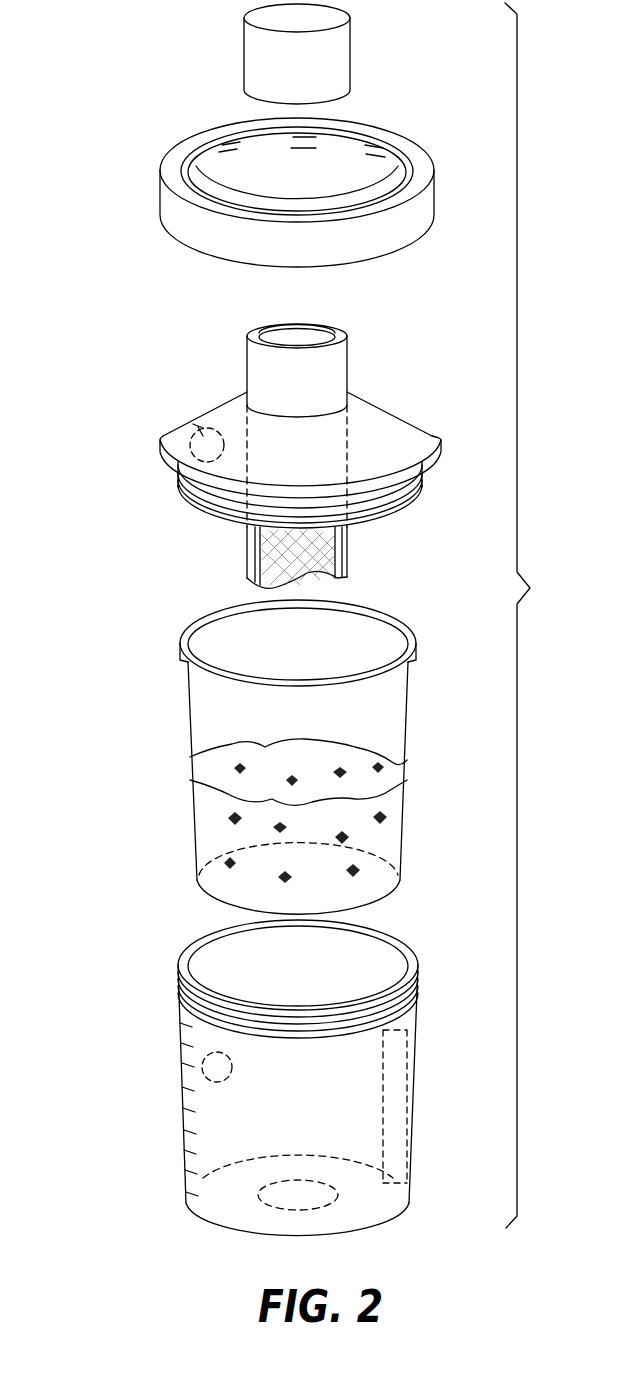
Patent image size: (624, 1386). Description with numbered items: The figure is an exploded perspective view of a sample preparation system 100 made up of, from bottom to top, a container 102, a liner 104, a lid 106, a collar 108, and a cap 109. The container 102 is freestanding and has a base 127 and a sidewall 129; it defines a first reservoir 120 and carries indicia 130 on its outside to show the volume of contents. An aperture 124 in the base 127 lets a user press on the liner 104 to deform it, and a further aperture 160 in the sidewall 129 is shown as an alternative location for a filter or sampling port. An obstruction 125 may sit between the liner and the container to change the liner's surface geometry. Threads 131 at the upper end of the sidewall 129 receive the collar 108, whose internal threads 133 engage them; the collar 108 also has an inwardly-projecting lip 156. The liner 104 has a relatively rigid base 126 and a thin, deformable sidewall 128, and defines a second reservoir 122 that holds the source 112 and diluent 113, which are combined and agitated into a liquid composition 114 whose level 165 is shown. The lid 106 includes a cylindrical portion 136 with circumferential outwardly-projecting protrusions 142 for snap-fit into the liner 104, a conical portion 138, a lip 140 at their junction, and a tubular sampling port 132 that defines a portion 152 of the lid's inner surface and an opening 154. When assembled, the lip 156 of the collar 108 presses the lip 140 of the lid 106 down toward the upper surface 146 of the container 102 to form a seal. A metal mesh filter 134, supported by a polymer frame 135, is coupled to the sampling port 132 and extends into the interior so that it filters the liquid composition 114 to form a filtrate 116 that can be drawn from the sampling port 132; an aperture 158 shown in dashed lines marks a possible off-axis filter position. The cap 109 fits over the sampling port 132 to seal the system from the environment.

The sample preparation system 100 is at (306, 641).
The container 102 is at (260, 1085).
The liner 104 is at (278, 757).
The lid 106 is at (309, 428).
The collar 108 is at (312, 173).
The cap 109 is at (343, 46).
The source 112 is at (228, 816).
The diluent 113 is at (383, 838).
The liquid composition 114 is at (208, 838).
The filtrate 116 is at (326, 451).
The first reservoir 120 is at (350, 958).
The second reservoir 122 is at (346, 638).
The aperture 124 is at (313, 1207).
The obstruction 125 is at (412, 1110).
The base 126 is at (215, 898).
The base 127 is at (213, 1223).
The sidewall 128 is at (407, 693).
The sidewall 129 is at (412, 1062).
The indicia 130 is at (190, 1063).
The threads 131 is at (183, 998).
The sampling port 132 is at (337, 368).
The internal threads 133 is at (238, 160).
The filter 134 is at (273, 565).
The frame 135 is at (343, 551).
The cylindrical portion 136 is at (193, 500).
The conical portion 138 is at (223, 417).
The lip 140 is at (428, 450).
The outwardly-projecting protrusions 142 is at (387, 505).
The upper surface 146 is at (415, 639).
The portion of the inner surface 152 is at (294, 328).
The opening 154 is at (270, 328).
The inwardly-projecting lip 156 is at (220, 140).
The aperture 158 is at (190, 418).
The aperture 160 is at (205, 1083).
The level 165 is at (390, 752).